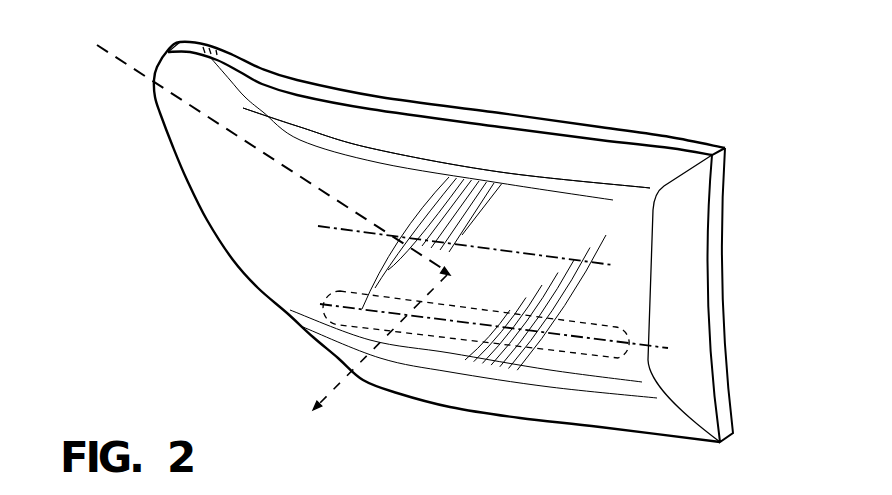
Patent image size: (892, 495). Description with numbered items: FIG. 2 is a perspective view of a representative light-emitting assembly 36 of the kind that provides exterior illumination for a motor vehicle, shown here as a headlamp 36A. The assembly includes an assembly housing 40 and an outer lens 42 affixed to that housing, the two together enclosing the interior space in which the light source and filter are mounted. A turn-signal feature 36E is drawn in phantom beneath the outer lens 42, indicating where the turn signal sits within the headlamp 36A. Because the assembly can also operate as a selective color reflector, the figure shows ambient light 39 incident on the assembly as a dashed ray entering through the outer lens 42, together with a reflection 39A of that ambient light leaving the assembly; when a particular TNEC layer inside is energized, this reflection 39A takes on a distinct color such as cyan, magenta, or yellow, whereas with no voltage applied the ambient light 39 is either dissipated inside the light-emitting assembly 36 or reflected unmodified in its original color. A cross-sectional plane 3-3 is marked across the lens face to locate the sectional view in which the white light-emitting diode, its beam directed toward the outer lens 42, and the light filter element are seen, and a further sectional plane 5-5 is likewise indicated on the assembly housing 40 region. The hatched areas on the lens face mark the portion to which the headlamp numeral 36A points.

The light-emitting assembly 36 is at (786, 160).
The vehicle headlamp 36A is at (515, 206).
The turn signal 36E is at (572, 352).
The ambient light 39 is at (277, 160).
The reflection of the ambient light 39A is at (348, 383).
The assembly housing 40 is at (682, 144).
The outer lens 42 is at (571, 156).
The cross-sectional plane 3 is at (615, 304).
The section line 5- 5 is at (668, 388).